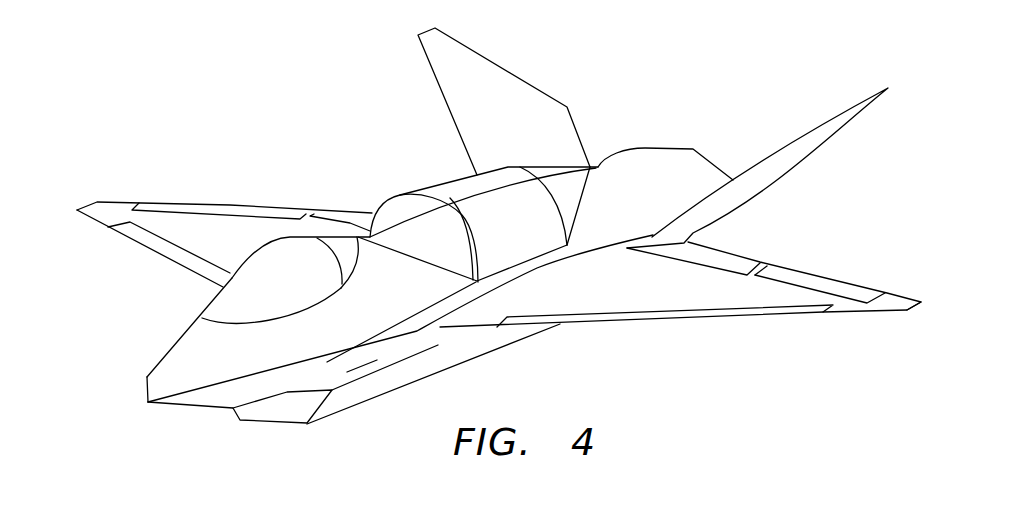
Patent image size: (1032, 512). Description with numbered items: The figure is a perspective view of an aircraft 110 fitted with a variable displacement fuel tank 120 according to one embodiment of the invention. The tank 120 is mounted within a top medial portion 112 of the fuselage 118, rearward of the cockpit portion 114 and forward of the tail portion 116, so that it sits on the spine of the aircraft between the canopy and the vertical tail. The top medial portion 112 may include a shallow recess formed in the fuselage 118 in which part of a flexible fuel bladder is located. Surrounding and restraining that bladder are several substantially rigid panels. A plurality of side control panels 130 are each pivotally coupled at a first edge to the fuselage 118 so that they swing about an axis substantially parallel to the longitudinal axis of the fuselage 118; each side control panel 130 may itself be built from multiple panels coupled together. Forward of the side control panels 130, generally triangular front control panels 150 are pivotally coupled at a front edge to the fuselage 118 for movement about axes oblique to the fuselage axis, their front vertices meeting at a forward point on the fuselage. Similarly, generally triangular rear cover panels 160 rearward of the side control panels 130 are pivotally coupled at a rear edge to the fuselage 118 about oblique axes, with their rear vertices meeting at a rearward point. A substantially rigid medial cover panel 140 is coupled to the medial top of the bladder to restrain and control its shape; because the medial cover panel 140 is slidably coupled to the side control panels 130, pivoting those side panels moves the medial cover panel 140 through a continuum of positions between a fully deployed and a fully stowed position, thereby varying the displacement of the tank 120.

The aircraft 110 is at (330, 108).
The top medial portion 112 is at (448, 279).
The cockpit portion 114 is at (218, 314).
The tail portion 116 is at (668, 156).
The fuselage 118 is at (593, 227).
The variable displacement fuel tank 120 is at (378, 178).
The side control panel 130 is at (503, 203).
The medial cover panel 140 is at (468, 183).
The front control panel 150 is at (427, 228).
The rear cover panel 160 is at (573, 209).